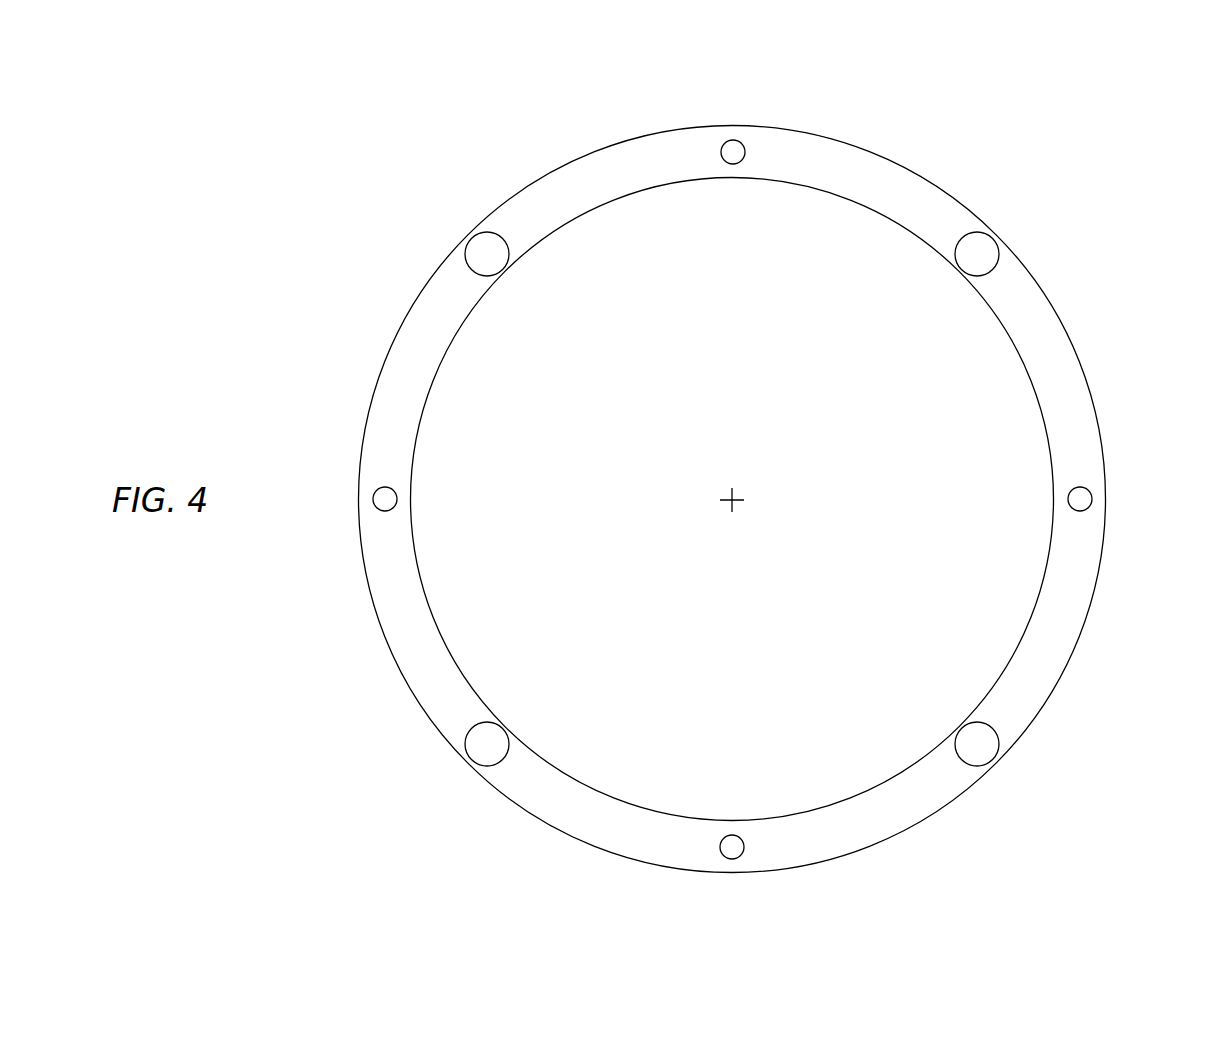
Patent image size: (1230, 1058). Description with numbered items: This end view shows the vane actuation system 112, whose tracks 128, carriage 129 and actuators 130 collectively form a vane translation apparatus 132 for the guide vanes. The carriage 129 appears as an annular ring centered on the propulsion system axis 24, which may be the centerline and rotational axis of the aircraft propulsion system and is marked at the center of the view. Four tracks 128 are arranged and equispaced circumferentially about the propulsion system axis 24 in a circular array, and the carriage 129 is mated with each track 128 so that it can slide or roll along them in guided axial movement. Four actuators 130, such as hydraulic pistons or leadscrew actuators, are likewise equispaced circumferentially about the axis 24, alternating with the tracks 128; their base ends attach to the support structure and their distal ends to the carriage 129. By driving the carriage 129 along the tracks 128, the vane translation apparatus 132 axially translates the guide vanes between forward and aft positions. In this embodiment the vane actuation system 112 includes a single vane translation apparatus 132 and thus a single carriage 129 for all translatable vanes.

The propulsion system axis 24 is at (735, 497).
The vane actuation system 112 is at (767, 499).
The tracks 128 is at (733, 140).
The carriage 129 is at (1073, 342).
The actuators 130 is at (503, 270).
The vane translation apparatus 132 is at (732, 499).